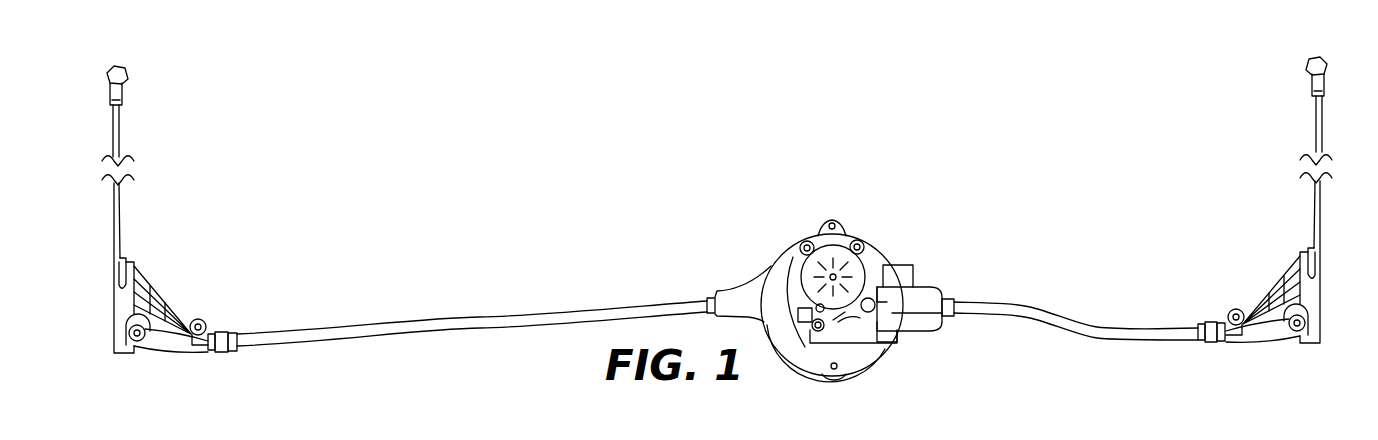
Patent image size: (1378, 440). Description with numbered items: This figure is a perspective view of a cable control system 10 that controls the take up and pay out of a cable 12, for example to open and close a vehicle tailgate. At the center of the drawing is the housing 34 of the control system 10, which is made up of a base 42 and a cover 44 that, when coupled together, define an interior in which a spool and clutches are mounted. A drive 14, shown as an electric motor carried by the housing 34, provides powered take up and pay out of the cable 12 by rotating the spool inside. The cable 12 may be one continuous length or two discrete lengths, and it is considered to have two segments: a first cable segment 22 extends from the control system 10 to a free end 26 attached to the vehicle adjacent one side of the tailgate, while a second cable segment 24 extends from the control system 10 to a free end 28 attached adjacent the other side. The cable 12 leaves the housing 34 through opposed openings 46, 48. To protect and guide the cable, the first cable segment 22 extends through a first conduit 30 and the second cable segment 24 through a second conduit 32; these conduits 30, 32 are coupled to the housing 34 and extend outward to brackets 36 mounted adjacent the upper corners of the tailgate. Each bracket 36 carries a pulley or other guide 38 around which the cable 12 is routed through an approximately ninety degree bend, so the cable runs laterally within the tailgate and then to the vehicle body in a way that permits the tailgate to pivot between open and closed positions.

The cable control system 10 is at (889, 218).
The cable 12 is at (1333, 124).
The drive 14 is at (931, 288).
The first cable segment 22 is at (121, 209).
The second cable segment 24 is at (1314, 200).
The free end 26 is at (127, 71).
The free end 28 is at (1310, 62).
The first conduit 30 is at (478, 316).
The second conduit 32 is at (1060, 317).
The housing 34 is at (766, 256).
The bracket 36 is at (194, 344).
The guide 38 is at (141, 326).
The base 42 is at (880, 355).
The cover 44 is at (882, 256).
The opening 46 is at (706, 303).
The opening 48 is at (957, 305).